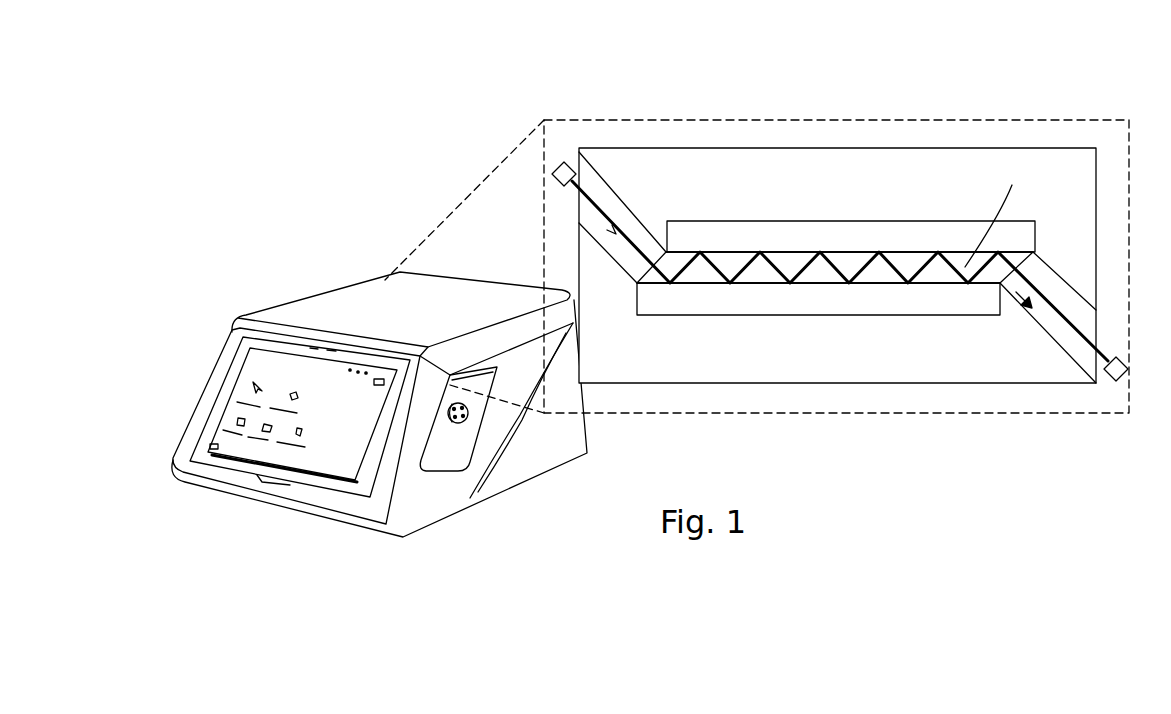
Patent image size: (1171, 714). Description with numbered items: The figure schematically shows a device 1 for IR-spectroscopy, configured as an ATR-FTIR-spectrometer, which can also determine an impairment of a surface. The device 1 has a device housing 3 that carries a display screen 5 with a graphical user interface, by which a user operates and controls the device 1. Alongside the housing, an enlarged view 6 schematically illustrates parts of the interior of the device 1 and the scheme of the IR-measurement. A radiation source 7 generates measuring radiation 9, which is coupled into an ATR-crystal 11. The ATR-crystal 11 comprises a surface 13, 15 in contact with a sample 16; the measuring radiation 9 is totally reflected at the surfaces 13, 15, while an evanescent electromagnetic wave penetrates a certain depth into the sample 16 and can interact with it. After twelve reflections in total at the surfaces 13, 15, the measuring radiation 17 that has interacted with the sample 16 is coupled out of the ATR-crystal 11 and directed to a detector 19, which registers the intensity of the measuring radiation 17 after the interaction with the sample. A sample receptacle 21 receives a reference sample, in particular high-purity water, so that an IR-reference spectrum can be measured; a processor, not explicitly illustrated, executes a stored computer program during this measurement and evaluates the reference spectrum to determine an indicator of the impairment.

The device 1 is at (836, 229).
The device housing 3 is at (357, 291).
The display screen 5 is at (255, 365).
The enlarged view 6 is at (748, 119).
The radiation source 7 is at (573, 161).
The measuring radiation 9 is at (617, 231).
The ATR-crystal 11 is at (795, 262).
The surface 13 is at (907, 248).
The surface 15 is at (930, 284).
The sample 16 is at (882, 236).
The measuring radiation 17 is at (1034, 281).
The detector 19 is at (1123, 357).
The sample receptacle 21 is at (695, 208).